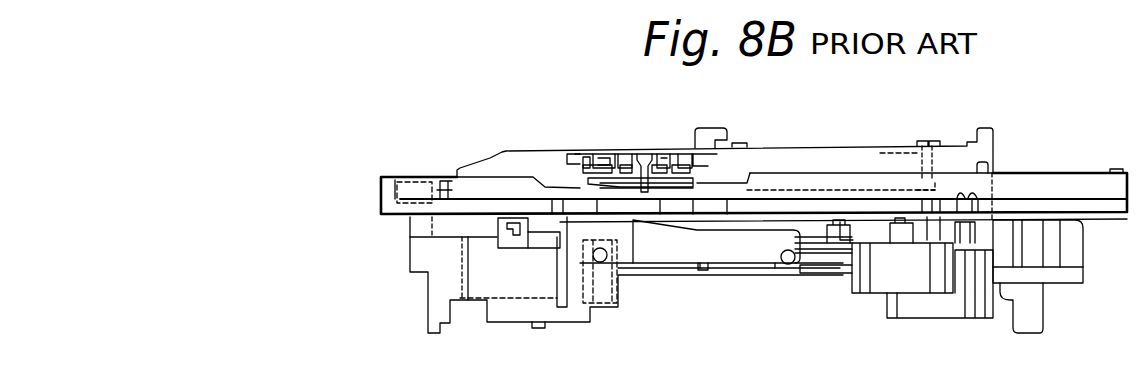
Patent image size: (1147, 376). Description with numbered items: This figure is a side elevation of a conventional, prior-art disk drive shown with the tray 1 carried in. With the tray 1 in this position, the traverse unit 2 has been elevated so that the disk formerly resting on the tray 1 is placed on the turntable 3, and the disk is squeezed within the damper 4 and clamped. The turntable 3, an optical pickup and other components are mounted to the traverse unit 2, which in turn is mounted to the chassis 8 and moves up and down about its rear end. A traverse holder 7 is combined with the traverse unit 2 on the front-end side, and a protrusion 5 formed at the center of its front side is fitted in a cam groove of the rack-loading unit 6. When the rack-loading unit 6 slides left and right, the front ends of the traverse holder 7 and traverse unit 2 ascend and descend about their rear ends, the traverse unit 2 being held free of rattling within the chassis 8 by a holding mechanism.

The tray 1 is at (393, 215).
The traverse unit 2 is at (781, 276).
The turntable 3 is at (710, 180).
The damper 4 is at (603, 160).
The protrusion 5 is at (540, 225).
The rack-loading unit 6 is at (562, 287).
The traverse holder 7 is at (663, 245).
The chassis 8 is at (1027, 243).